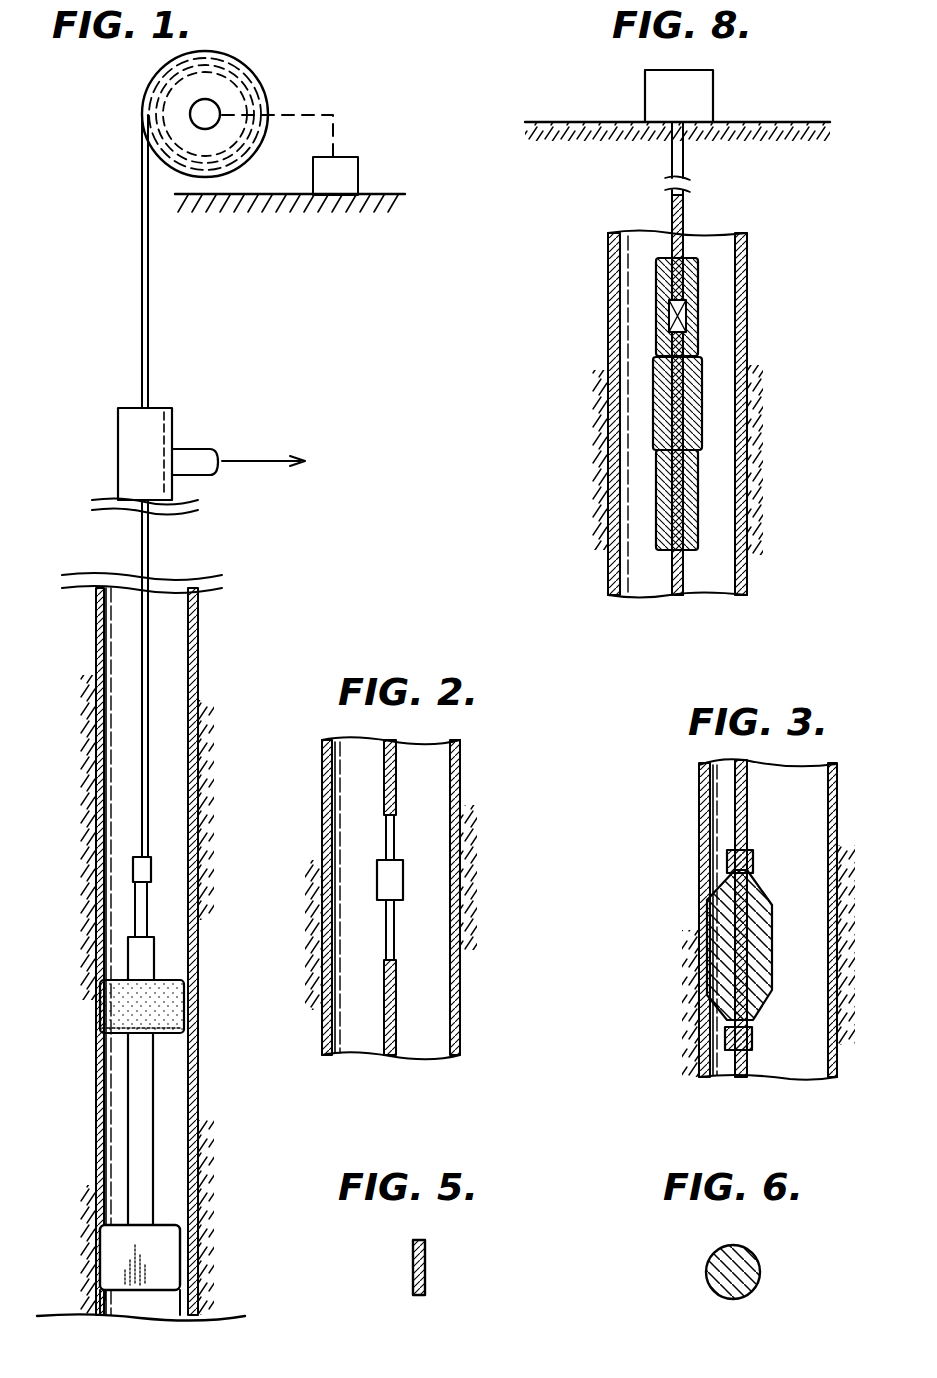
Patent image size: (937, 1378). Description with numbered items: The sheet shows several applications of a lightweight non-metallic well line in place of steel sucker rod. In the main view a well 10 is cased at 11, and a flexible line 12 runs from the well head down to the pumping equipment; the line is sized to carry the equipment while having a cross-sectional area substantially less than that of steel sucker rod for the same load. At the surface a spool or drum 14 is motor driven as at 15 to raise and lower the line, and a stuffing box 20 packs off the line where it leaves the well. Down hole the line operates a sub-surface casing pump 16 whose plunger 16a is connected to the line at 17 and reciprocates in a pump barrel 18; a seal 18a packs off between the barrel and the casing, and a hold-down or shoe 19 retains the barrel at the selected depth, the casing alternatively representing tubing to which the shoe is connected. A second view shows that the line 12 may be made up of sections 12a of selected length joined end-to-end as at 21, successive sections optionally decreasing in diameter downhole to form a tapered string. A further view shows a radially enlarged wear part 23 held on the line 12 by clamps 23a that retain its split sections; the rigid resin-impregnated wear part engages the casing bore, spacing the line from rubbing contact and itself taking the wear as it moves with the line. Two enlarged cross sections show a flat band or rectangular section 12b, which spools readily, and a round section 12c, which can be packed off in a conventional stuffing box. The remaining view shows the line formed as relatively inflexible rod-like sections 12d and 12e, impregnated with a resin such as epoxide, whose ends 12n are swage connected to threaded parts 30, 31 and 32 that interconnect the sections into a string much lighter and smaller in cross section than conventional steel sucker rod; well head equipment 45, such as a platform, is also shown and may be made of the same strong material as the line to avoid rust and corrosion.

In FIG. 1, the well 10 is at (190, 763).
In FIG. 8, the well 10 is at (677, 460).
In FIG. 2, the well 10 is at (320, 991).
In FIG. 3, the well 10 is at (828, 996).
In FIG. 1, the casing 11 is at (198, 945).
In FIG. 8, the casing 11 is at (747, 288).
In FIG. 2, the casing 11 is at (460, 903).
In FIG. 3, the casing 11 is at (837, 935).
In FIG. 1, the line 12 is at (140, 622).
In FIG. 3, the line 12 is at (747, 790).
In FIG. 2, the line sections 12a is at (396, 778).
In FIG. 5, the flat band line section 12b is at (425, 1268).
In FIG. 6, the round line section 12c is at (752, 1280).
In FIG. 8, the rod-like line section 12d is at (683, 212).
In FIG. 8, the rod-like line section 12e is at (688, 583).
In FIG. 8, the line ends 12n is at (675, 316).
In FIG. 1, the spool or drum 14 is at (130, 112).
In FIG. 1, the motor drive 15 is at (345, 172).
In FIG. 1, the sub-surface pump 16 is at (128, 1112).
In FIG. 1, the plunger 16a is at (133, 900).
In FIG. 1, the line connection 17 is at (150, 868).
In FIG. 1, the pump barrel 18 is at (138, 963).
In FIG. 1, the seal 18a is at (125, 1010).
In FIG. 1, the hold-down or shoe 19 is at (165, 1260).
In FIG. 1, the stuffing box 20 is at (135, 438).
In FIG. 2, the end-to-end connection 21 is at (400, 872).
In FIG. 3, the wear part 23 is at (710, 896).
In FIG. 3, the clamps 23a is at (728, 857).
In FIG. 8, the threaded part 30 is at (698, 333).
In FIG. 8, the threaded part 31 is at (690, 407).
In FIG. 8, the threaded part 32 is at (693, 517).
In FIG. 8, the well head equipment 45 is at (697, 97).